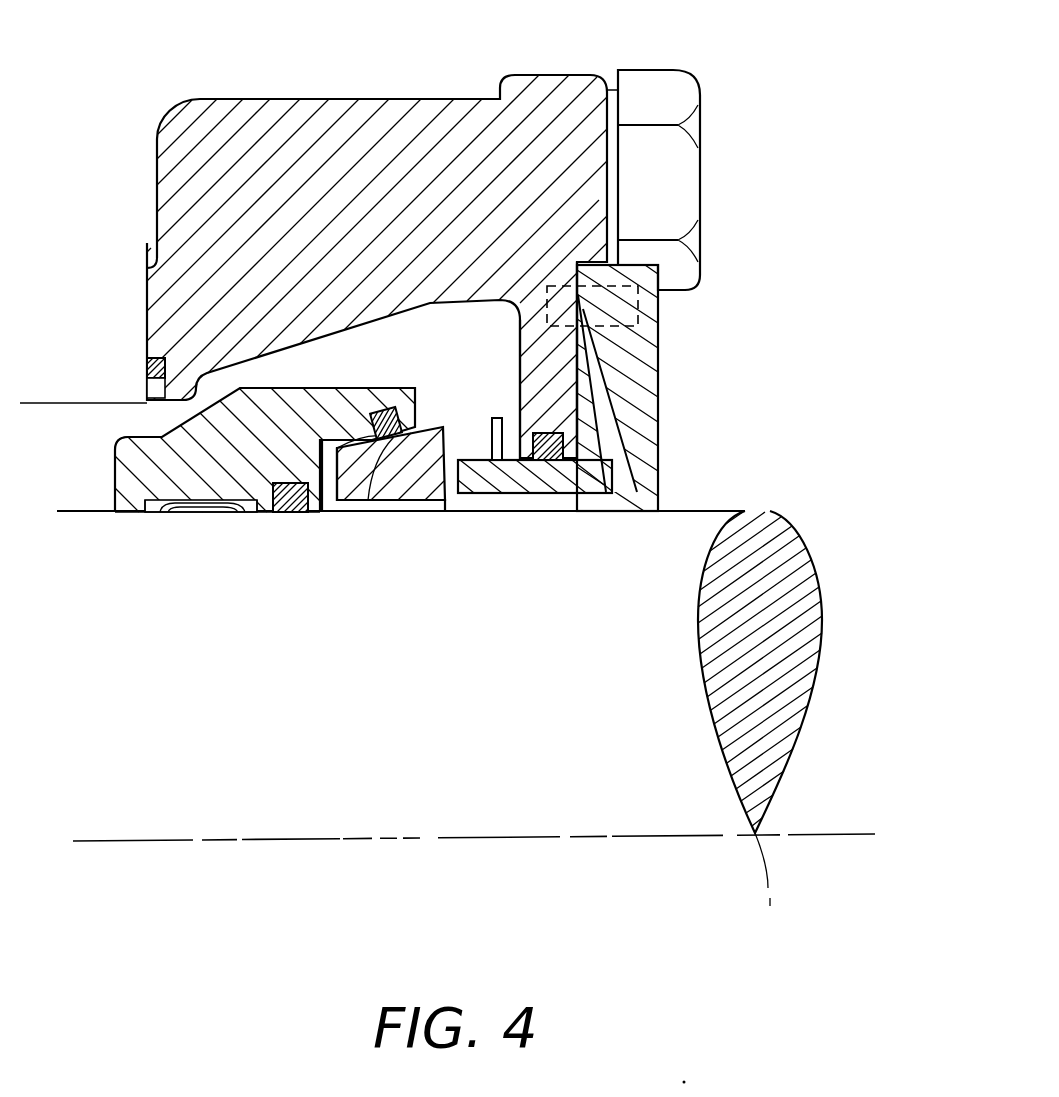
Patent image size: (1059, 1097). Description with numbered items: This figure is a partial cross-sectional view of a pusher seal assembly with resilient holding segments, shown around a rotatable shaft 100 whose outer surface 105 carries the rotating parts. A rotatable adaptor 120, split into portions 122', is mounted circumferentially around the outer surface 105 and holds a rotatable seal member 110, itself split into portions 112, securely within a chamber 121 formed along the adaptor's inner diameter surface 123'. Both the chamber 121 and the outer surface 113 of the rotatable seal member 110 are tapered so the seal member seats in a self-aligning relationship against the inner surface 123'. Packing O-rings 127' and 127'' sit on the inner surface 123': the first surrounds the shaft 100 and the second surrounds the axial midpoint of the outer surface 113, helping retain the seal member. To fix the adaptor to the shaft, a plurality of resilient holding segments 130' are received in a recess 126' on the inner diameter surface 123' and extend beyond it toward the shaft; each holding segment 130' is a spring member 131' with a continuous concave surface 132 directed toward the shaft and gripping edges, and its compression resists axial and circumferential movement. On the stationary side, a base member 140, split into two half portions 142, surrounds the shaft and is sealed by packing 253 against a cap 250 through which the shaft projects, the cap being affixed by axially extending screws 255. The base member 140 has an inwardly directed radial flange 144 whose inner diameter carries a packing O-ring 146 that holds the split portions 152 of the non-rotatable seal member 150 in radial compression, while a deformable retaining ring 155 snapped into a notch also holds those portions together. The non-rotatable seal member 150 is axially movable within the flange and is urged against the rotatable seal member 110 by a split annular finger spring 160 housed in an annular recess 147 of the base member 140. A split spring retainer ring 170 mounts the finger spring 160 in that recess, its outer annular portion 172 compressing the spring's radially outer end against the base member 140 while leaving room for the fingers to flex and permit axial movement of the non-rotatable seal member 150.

The rotatable shaft 100 is at (800, 612).
The outer surface of the rotatable shaft 105 is at (80, 512).
The rotatable seal member 110 is at (414, 472).
The portions of the rotatable seal member 112 is at (434, 494).
The outer surface of the rotatable seal member 113 is at (408, 412).
The stationary seal assembly 120 is at (230, 488).
The chamber 121 is at (320, 448).
The portions of the rotatable adaptor 122' is at (327, 375).
The inner diameter surface of the rotatable adaptor 123' is at (103, 503).
The recess 126' is at (186, 547).
The packing O-ring 127' is at (313, 545).
The packing O-ring 127'' is at (383, 501).
The resilient holding segments 130' is at (217, 588).
The spring member 131' is at (265, 450).
The seal groove 132 is at (235, 505).
The base member 140 is at (467, 304).
The portions of the base member 142 is at (330, 118).
The radial flange 144 is at (522, 345).
The packing O-ring 146 is at (590, 490).
The annular recess 147 is at (605, 425).
The non-rotatable seal member 150 is at (558, 497).
The portions of the non-rotatable seal member 152 is at (527, 493).
The deformable retaining ring 155 is at (497, 418).
The split annular finger spring 160 is at (603, 450).
The split spring retainer ring 170 is at (655, 385).
The outer annular portion of the spring retainer ring 172 is at (555, 268).
The cap 250 is at (95, 313).
The packing 253 is at (147, 368).
The screw 255 is at (690, 97).